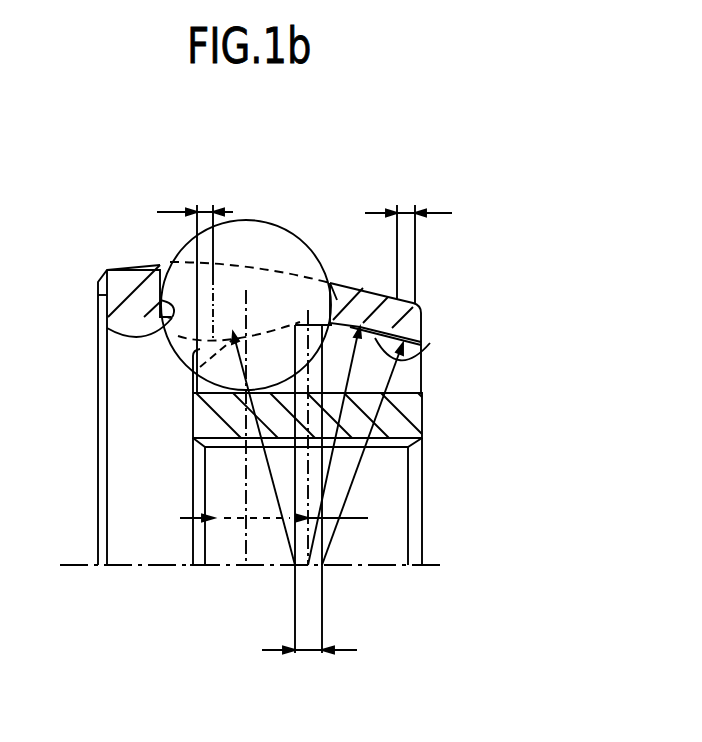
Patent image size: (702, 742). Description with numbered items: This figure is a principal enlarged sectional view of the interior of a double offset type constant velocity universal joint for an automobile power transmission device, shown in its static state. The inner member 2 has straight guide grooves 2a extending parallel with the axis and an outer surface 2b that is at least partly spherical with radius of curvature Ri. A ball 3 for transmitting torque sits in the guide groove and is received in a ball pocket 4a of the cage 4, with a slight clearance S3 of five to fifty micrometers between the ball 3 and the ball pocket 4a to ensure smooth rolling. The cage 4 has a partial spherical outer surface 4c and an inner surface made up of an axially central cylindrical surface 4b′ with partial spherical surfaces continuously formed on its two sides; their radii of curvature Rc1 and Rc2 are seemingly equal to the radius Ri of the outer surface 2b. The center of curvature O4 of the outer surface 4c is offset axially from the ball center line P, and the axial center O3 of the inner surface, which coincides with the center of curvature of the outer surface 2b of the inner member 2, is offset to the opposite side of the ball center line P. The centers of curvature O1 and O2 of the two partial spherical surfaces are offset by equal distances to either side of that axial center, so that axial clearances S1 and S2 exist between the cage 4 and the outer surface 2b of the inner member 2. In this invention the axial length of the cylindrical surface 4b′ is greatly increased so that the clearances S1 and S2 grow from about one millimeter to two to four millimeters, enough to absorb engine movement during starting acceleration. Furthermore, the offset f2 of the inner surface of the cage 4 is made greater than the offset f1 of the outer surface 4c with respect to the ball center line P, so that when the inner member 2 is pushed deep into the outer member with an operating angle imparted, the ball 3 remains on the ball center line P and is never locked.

The inner member 2 is at (198, 414).
The straight guide grooves 2a is at (423, 394).
The outer surface 2b is at (422, 350).
The ball 3 is at (281, 243).
The cage 4 is at (98, 295).
The ball pocket 4a is at (108, 330).
The cylindrical surface 4b′ is at (308, 652).
The outer surface 4c is at (160, 265).
The axial clearance S1 is at (203, 210).
The axial clearance S2 is at (405, 212).
The clearance S3 is at (168, 263).
The radius of curvature Rc1 is at (266, 460).
The radius of curvature Rc2 is at (380, 423).
The radius of curvature Ri is at (330, 470).
The amount of offset f1 is at (213, 512).
The amount of offset f2 is at (275, 508).
The center of curvature O1 is at (291, 570).
The center of curvature O2 is at (327, 570).
The axial center O3 is at (307, 572).
The center of curvature O4 is at (193, 568).
The ball center line P is at (244, 555).